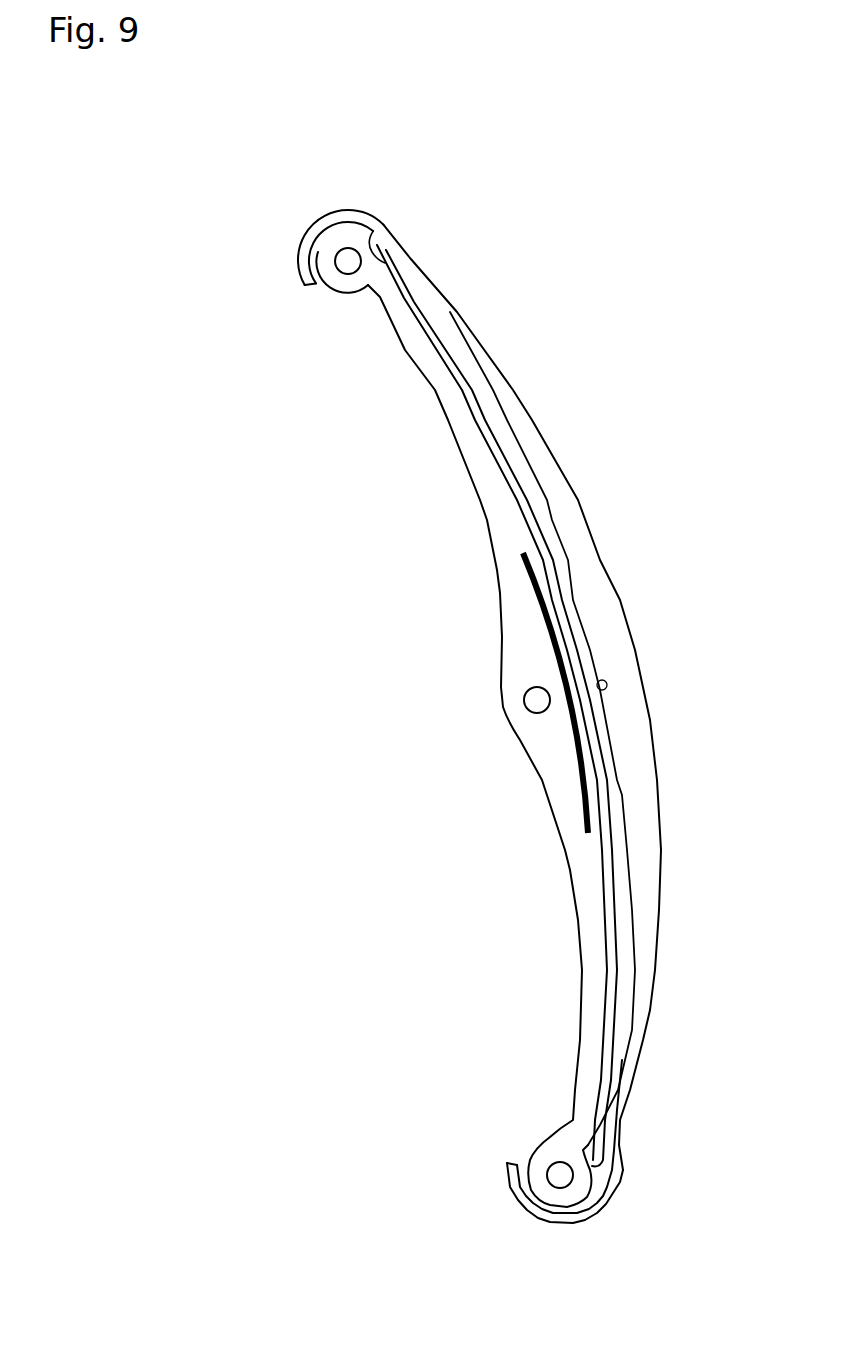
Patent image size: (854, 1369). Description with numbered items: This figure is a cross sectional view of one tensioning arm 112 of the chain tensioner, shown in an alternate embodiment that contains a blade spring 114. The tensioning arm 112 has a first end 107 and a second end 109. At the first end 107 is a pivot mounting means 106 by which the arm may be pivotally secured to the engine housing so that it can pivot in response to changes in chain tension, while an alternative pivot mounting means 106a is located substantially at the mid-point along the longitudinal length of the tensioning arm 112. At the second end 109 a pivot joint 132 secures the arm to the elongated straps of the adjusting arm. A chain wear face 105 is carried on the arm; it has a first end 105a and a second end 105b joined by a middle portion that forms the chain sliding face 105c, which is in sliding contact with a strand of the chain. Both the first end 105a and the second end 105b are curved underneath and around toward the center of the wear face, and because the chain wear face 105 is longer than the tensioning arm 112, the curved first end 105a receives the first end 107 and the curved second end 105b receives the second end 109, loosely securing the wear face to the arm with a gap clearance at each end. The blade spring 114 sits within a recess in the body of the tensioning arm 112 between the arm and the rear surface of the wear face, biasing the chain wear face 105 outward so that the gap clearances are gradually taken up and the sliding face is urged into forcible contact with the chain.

The chain wear face 105 is at (510, 1195).
The first end of chain wear face 105a is at (570, 1223).
The second end of chain wear face 105b is at (322, 214).
The chain sliding face 105c is at (585, 625).
The pivot mounting means 106 is at (560, 1177).
The pivot mounting means 106a is at (537, 700).
The first end of tensioning arm 107 is at (540, 1143).
The second end of tensioning arm 109 is at (356, 283).
The tensioning arm 112 is at (478, 452).
The blade spring 114 is at (560, 628).
The pivot joint 132 is at (348, 261).